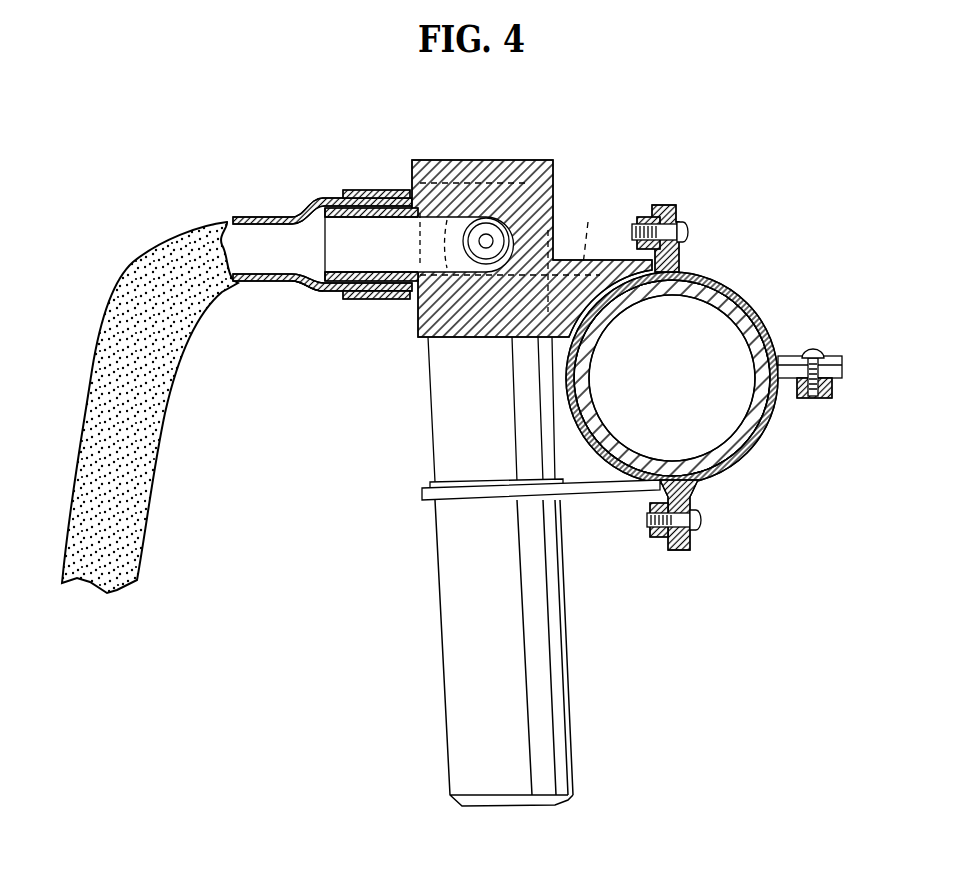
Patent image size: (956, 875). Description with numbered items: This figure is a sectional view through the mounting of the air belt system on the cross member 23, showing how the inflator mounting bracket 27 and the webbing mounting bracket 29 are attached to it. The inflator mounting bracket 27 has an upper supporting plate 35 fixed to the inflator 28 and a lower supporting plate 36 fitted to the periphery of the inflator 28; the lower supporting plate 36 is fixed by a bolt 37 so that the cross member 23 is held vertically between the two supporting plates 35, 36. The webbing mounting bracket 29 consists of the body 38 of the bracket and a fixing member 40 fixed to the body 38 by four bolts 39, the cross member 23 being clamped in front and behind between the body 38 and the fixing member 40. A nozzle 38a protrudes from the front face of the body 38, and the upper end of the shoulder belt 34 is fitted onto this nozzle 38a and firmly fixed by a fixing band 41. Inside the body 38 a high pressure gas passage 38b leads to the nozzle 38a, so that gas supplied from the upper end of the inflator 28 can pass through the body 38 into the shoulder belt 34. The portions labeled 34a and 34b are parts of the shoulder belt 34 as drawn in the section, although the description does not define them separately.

The cross member 23 is at (604, 427).
The inflator mounting bracket 27 is at (588, 492).
The inflator 28 is at (453, 661).
The webbing mounting bracket 29 is at (519, 152).
The shoulder belt 34 is at (307, 138).
The grip tube portion 34a is at (301, 211).
The grip portion 34b is at (245, 216).
The upper supporting plate 35 is at (587, 229).
The lower supporting plate 36 is at (471, 500).
The bolt 37 is at (812, 350).
The body of the bracket 38 is at (418, 323).
The nozzle 38a is at (308, 291).
The high pressure gas passage 38b is at (421, 228).
The bolts 39 is at (677, 229).
The fixing member 40 is at (722, 281).
The fixing band 41 is at (362, 189).